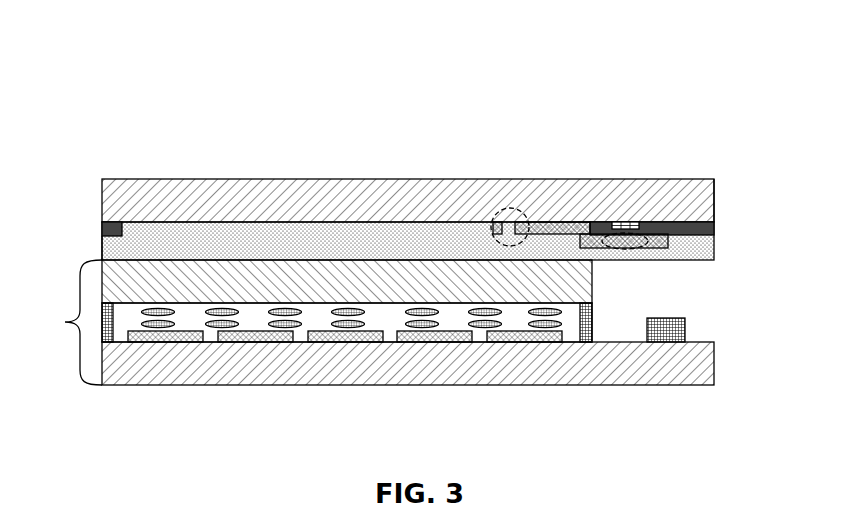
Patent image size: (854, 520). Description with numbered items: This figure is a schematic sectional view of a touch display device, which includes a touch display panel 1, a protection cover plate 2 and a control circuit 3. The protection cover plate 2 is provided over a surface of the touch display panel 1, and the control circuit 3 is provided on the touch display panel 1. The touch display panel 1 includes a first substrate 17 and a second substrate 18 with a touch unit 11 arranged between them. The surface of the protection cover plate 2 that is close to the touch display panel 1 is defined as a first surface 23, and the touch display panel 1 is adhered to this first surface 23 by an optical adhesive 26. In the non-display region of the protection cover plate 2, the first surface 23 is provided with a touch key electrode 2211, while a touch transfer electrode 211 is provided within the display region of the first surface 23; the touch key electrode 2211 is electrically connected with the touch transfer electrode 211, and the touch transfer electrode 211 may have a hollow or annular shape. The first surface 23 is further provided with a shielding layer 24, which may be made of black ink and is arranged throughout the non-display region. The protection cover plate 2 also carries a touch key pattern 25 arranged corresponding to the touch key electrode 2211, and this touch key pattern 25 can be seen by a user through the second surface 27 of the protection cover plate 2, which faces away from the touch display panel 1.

The touch display panel 1 is at (73, 322).
The protection cover plate 2 is at (352, 178).
The control circuit 3 is at (675, 329).
The touch unit 11 is at (507, 340).
The first substrate 17 is at (190, 277).
The second substrate 18 is at (322, 360).
The first surface 23 is at (177, 223).
The shielding layer 24 is at (114, 222).
The touch key pattern 25 is at (627, 223).
The optical adhesive 26 is at (260, 237).
The second surface 27 is at (683, 178).
The touch transfer electrode 211 is at (493, 222).
The touch key electrode 2211 is at (650, 245).